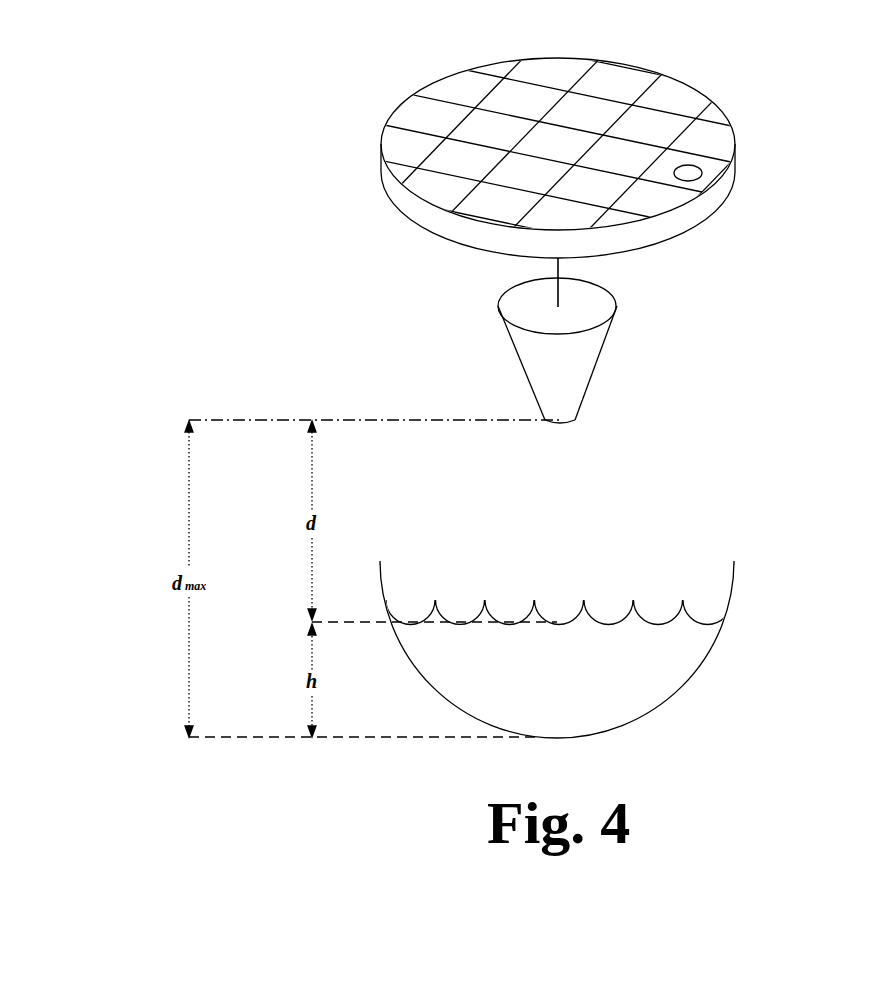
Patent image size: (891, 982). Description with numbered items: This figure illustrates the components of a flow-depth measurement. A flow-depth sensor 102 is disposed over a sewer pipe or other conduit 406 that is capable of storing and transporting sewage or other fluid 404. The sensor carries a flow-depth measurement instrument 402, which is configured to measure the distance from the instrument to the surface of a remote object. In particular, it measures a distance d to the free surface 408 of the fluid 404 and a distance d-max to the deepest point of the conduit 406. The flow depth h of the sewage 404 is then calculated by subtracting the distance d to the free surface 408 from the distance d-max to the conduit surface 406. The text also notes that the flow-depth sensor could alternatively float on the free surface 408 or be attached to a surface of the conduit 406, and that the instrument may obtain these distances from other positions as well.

The flow-depth sensor 102 is at (450, 211).
The flow-depth measurement instrument 402 is at (598, 357).
The sewage (or other fluid) 404 is at (581, 649).
The sewer pipe (or other conduit) 406 is at (736, 582).
The free surface 408 is at (590, 618).